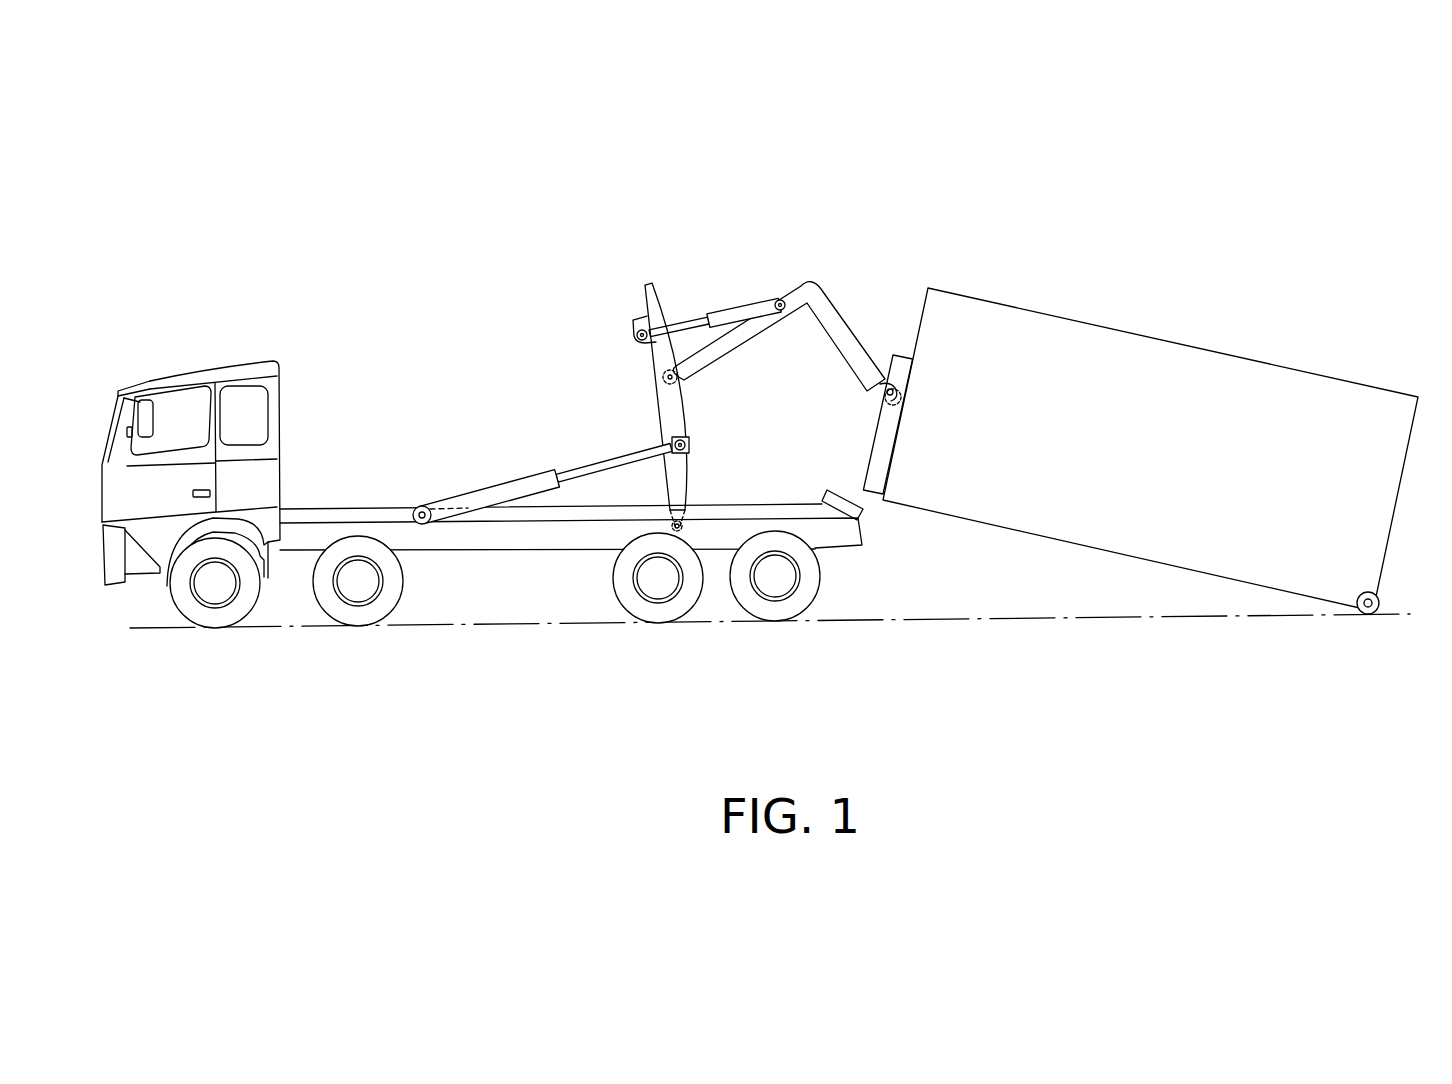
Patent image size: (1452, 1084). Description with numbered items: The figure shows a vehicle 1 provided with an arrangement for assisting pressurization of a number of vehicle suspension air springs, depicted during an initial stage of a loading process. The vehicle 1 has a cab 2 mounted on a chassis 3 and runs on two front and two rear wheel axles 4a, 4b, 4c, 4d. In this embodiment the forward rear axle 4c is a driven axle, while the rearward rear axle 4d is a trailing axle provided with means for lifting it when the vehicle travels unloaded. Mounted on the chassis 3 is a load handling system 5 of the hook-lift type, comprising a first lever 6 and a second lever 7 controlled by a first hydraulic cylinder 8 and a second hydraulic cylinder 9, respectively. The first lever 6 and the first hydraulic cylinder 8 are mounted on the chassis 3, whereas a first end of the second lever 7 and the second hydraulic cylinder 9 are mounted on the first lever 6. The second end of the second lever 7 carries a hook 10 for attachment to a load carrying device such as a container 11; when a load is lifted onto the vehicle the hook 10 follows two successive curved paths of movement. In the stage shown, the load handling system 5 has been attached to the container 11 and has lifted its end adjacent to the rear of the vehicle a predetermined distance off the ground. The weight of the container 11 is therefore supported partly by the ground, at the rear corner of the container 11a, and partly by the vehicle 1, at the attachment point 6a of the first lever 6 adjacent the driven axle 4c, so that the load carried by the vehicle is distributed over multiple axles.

The vehicle 1 is at (234, 336).
The cab 2 is at (176, 377).
The chassis 3 is at (492, 553).
The front wheel axle 4a is at (170, 625).
The front wheel axle 4b is at (314, 626).
The forward rear axle 4c is at (615, 625).
The rearward rear axle 4d is at (740, 628).
The load handling system 5 is at (834, 259).
The first lever 6 is at (692, 423).
The attachment point 6a is at (677, 527).
The second lever 7 is at (860, 327).
The first hydraulic cylinder 8 is at (508, 483).
The second hydraulic cylinder 9 is at (738, 303).
The hook 10 is at (903, 400).
The container 11 is at (1233, 352).
The rear corner of the container 11a is at (1380, 614).